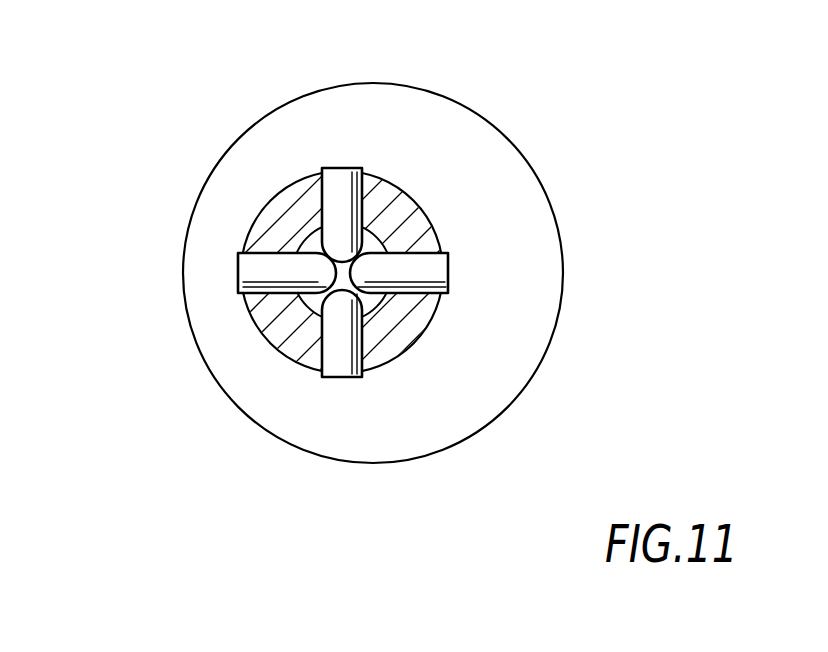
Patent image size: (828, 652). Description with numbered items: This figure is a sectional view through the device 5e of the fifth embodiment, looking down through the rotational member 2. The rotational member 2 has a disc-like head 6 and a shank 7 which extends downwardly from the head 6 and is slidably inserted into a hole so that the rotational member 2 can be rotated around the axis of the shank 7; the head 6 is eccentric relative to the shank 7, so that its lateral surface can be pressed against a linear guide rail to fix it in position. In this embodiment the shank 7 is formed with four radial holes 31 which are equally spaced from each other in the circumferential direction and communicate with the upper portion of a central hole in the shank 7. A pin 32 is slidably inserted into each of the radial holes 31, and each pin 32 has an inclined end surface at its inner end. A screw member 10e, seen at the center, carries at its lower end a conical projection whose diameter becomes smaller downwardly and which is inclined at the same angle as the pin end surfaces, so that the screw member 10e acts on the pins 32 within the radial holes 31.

The device 5e is at (222, 125).
The rotational member 2 is at (337, 115).
The disc-like head 6 is at (497, 157).
The shank 7 is at (270, 218).
The screw member 10e is at (370, 303).
The radial holes 31 is at (362, 198).
The pin 32 is at (332, 203).